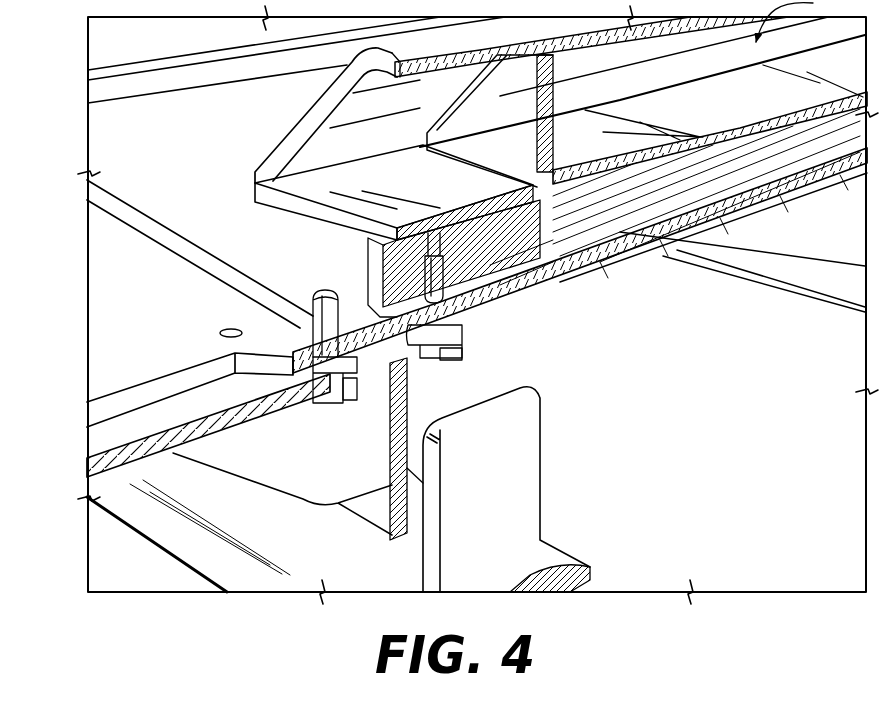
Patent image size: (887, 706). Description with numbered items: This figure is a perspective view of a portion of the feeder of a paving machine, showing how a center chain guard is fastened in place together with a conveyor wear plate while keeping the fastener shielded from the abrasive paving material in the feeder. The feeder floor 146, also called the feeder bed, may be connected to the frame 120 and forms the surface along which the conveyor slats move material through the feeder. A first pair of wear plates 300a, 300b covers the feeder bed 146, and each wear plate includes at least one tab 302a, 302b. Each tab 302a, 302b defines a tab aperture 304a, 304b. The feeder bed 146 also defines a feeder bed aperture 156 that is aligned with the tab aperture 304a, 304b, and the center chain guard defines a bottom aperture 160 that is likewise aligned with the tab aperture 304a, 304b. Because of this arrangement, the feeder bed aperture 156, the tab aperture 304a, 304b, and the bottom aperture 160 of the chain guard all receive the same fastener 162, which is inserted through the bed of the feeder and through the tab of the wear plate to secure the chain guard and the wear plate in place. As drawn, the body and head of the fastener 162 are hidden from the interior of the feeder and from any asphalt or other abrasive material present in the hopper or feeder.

The frame 120 is at (792, 264).
The feeder floor 146 is at (634, 259).
The feeder bed aperture 156 is at (413, 350).
The bottom aperture 160 is at (447, 258).
The fastener 162 is at (452, 358).
The wear plate 300a is at (135, 362).
The wear plate 300b is at (299, 306).
The tab 302a is at (495, 298).
The tab 302b is at (268, 340).
The tab aperture 304a is at (493, 296).
The tab aperture 304b is at (293, 317).